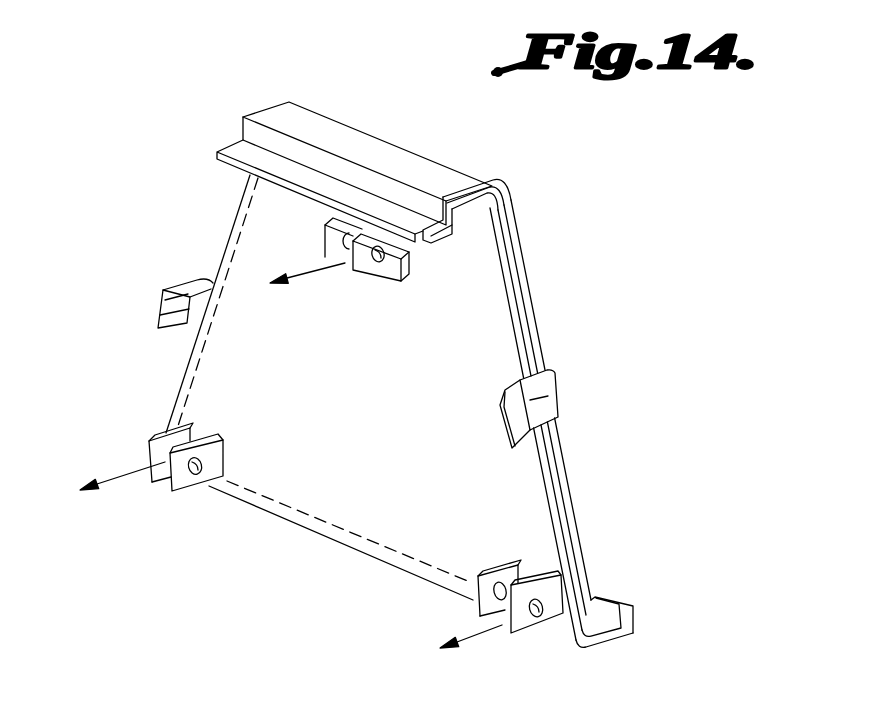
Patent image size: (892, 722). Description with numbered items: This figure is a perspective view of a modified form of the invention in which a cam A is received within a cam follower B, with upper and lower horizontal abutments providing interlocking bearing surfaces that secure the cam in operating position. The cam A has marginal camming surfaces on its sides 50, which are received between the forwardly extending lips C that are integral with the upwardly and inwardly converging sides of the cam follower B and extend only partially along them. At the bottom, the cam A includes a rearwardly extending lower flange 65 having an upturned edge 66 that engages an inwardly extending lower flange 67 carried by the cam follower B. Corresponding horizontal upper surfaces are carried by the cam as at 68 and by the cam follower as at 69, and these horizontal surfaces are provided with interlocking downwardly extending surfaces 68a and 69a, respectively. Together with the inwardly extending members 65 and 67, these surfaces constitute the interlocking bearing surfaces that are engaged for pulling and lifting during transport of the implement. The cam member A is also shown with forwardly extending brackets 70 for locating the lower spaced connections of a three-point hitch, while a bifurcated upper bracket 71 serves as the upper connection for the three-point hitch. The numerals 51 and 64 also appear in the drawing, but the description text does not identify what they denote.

The sides 50 is at (195, 360).
The clip 51 is at (200, 283).
The lower member 64 is at (170, 712).
The lower flange 65 is at (620, 643).
The upturned edge 66 is at (633, 615).
The lower flange 67 is at (602, 620).
The horizontal upper surface 68 is at (468, 197).
The downwardly extending surface 68a is at (458, 224).
The horizontal upper surface 69 is at (348, 140).
The downwardly extending surface 69a is at (285, 150).
The forwardly extending brackets 70 is at (178, 491).
The bifurcated upper bracket 71 is at (370, 282).
The cam A is at (548, 473).
The cam follower B is at (525, 302).
The forwardly extending lips C is at (158, 316).